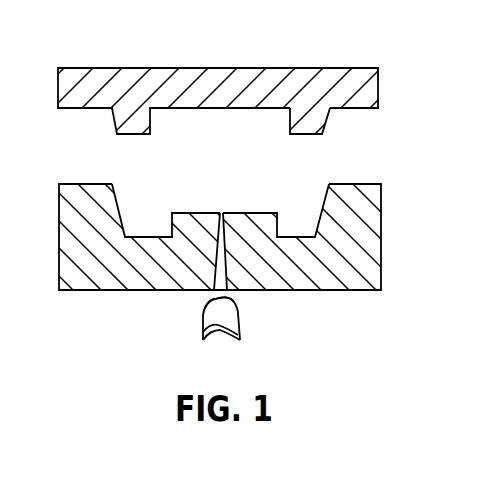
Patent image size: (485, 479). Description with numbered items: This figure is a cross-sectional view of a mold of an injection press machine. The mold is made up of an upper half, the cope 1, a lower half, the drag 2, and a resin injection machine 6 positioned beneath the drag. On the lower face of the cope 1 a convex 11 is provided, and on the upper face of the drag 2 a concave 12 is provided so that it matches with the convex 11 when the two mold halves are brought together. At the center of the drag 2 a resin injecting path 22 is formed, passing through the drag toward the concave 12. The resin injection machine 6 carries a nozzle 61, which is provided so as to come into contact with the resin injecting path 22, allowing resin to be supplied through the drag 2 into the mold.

The cope 1 is at (344, 84).
The convex 11 is at (297, 127).
The concave 12 is at (305, 190).
The drag 2 is at (353, 252).
The resin injecting path 22 is at (224, 291).
The resin injection machine 6 is at (242, 327).
The nozzle 61 is at (212, 298).